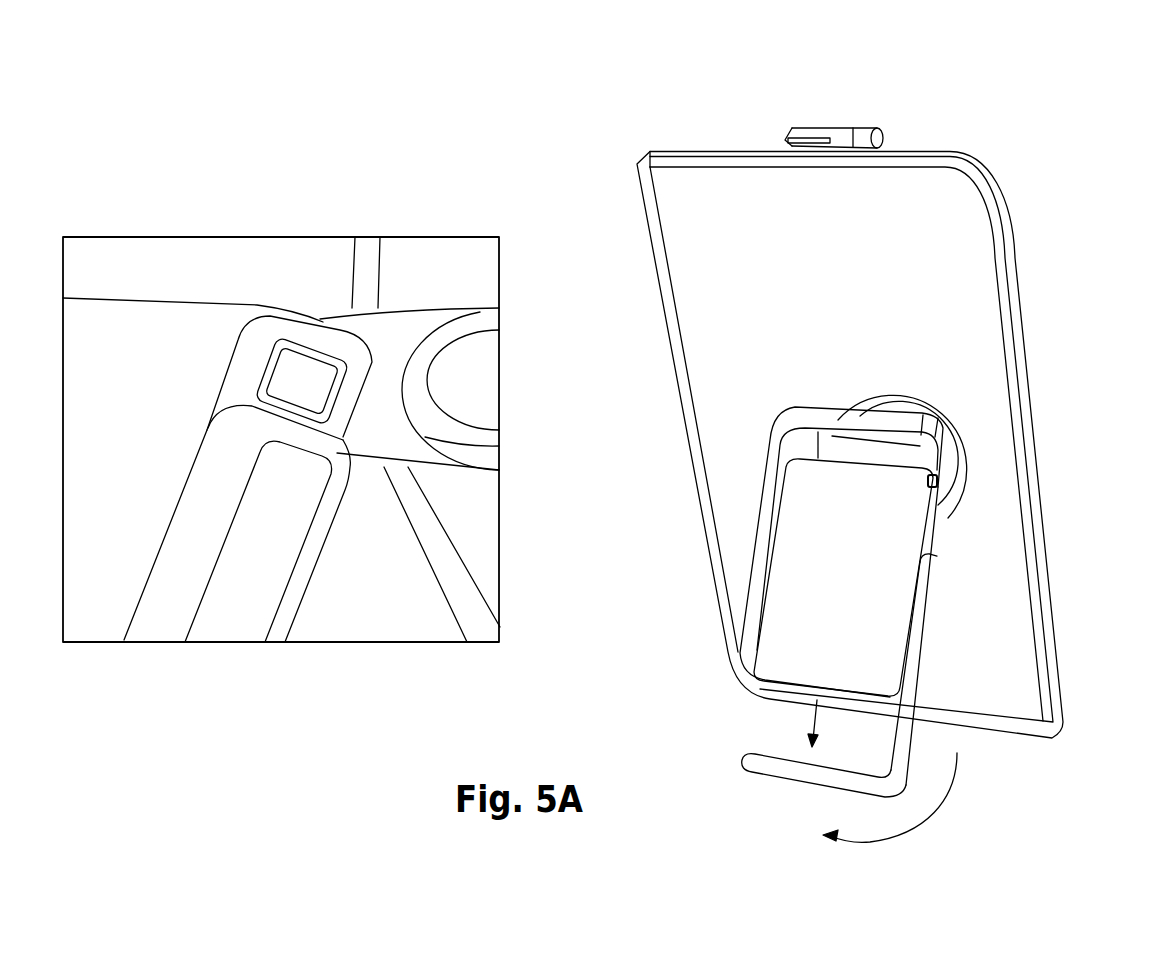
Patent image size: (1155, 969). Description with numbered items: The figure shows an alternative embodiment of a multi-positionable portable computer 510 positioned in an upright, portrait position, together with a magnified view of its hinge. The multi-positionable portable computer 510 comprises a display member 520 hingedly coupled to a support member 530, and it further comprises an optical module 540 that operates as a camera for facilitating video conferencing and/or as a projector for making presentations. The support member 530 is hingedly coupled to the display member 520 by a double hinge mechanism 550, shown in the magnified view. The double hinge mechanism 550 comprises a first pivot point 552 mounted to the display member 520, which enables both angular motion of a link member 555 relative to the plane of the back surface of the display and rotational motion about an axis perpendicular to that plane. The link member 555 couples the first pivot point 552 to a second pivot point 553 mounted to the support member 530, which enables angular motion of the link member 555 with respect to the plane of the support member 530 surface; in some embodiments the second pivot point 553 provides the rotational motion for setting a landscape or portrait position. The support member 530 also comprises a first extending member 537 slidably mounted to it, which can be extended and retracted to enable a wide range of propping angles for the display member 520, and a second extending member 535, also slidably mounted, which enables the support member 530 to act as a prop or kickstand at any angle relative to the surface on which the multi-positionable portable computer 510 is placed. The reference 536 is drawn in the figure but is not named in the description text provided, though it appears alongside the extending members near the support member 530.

The multi-positionable portable computer 510 is at (692, 104).
The display member 520 is at (1046, 300).
The support member 530 is at (879, 579).
The second extending member 535 is at (827, 420).
The support strap 536 is at (925, 532).
The first extending member 537 is at (782, 777).
The optical module 540 is at (867, 128).
The double hinge mechanism 550 is at (223, 175).
The first pivot point 552 is at (480, 382).
The second pivot point 553 is at (322, 324).
The link member 555 is at (380, 420).